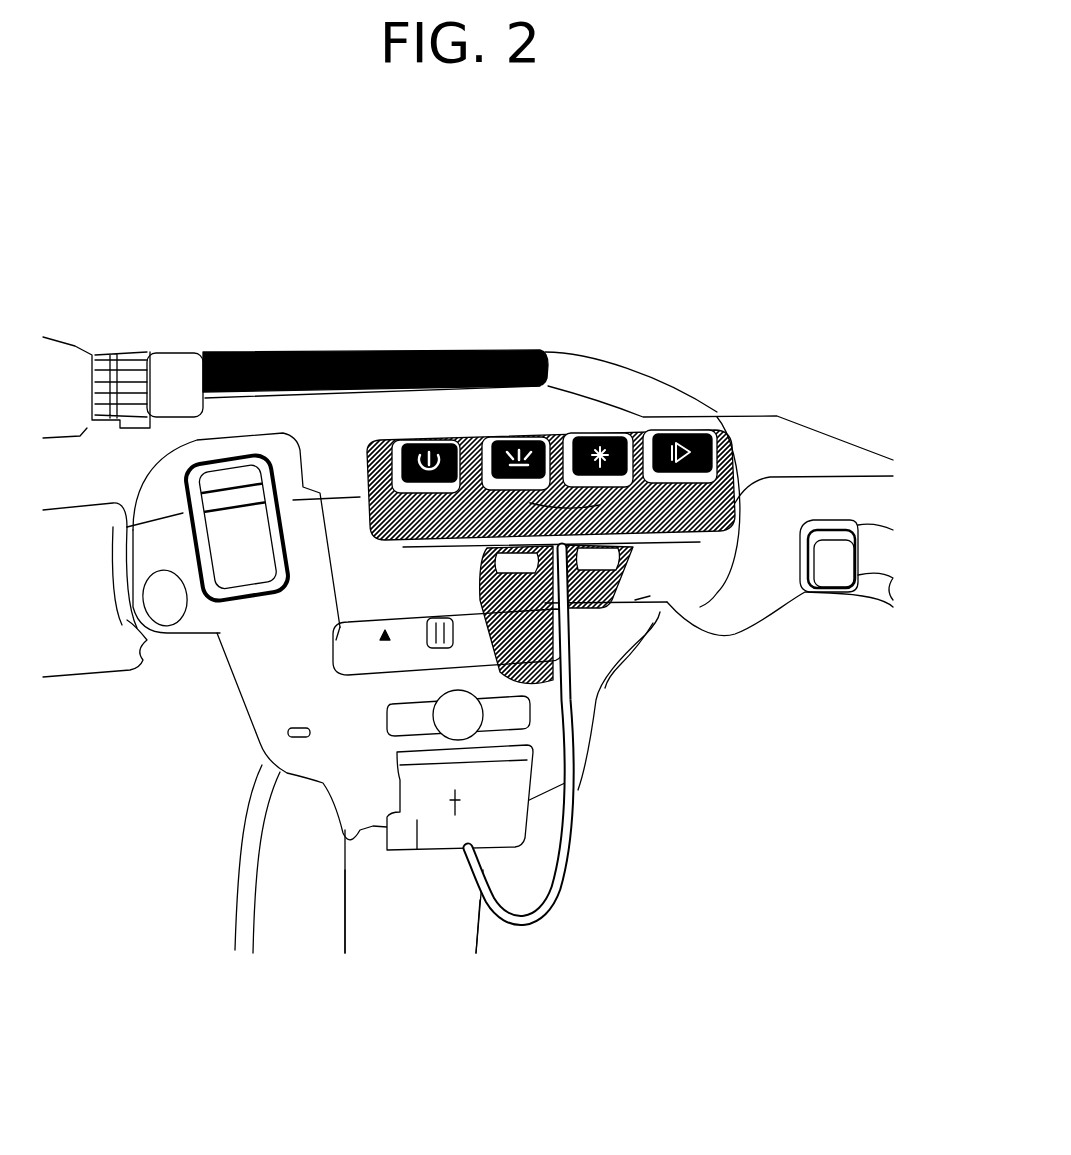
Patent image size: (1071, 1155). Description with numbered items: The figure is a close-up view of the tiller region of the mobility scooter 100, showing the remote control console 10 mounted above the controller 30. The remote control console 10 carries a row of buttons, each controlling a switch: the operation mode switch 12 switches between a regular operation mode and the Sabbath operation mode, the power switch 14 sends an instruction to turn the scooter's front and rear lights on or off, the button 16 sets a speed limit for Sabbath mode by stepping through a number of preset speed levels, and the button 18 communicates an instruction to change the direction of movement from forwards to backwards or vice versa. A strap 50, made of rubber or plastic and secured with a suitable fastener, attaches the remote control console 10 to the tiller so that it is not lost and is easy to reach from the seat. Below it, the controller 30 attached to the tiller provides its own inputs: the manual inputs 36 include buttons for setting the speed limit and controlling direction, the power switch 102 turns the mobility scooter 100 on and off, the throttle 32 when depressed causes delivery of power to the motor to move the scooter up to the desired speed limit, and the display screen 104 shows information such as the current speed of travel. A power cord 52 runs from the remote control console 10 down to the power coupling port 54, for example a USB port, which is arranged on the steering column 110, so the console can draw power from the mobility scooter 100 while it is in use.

The mobility scooter 100 is at (517, 232).
The remote control console 10 is at (600, 373).
The operation mode switch 12 is at (400, 440).
The power switch 14 is at (473, 437).
The button 16 is at (583, 437).
The button 18 is at (650, 433).
The controller 30 is at (375, 650).
The throttle 32 is at (847, 570).
The manual inputs 36 is at (243, 513).
The strap 50 is at (643, 598).
The power cord 52 is at (543, 910).
The power coupling port 54 is at (450, 840).
The power switch 102 is at (450, 716).
The display screen 104 is at (413, 657).
The steering column 110 is at (433, 953).